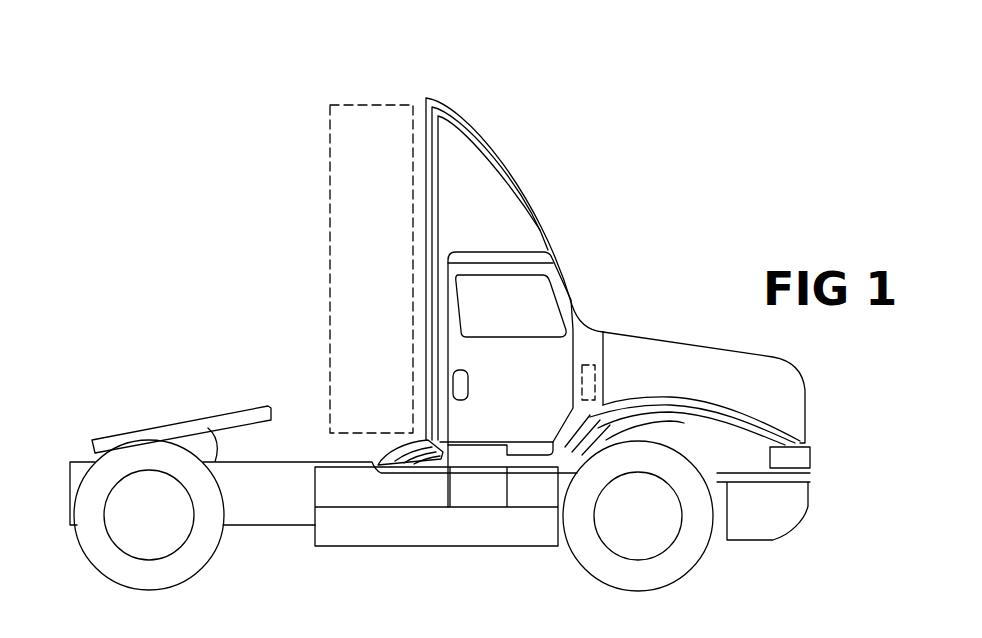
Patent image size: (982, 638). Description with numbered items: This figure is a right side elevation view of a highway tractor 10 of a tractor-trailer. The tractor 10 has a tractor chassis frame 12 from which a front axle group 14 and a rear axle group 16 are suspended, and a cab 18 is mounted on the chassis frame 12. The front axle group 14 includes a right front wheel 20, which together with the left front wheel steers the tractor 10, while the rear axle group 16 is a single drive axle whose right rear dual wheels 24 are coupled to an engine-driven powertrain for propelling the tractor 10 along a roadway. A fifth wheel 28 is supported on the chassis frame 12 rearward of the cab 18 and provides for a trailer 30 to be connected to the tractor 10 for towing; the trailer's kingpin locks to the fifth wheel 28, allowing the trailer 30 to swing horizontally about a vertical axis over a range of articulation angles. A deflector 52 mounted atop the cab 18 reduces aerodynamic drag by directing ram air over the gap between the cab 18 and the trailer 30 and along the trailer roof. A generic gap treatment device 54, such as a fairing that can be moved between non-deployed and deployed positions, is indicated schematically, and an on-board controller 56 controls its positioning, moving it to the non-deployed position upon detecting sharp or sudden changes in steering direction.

The highway tractor 10 is at (700, 258).
The tractor chassis frame 12 is at (283, 527).
The front axle group 14 is at (693, 577).
The rear axle group 16 is at (197, 585).
The cab 18 is at (573, 300).
The right front wheel 20 is at (627, 543).
The right rear dual wheels 24 is at (143, 542).
The fifth wheel 28 is at (270, 404).
The trailer 30 is at (436, 552).
The deflector 52 is at (513, 145).
The gap treatment device 54 is at (370, 104).
The on-board controller 56 is at (587, 362).